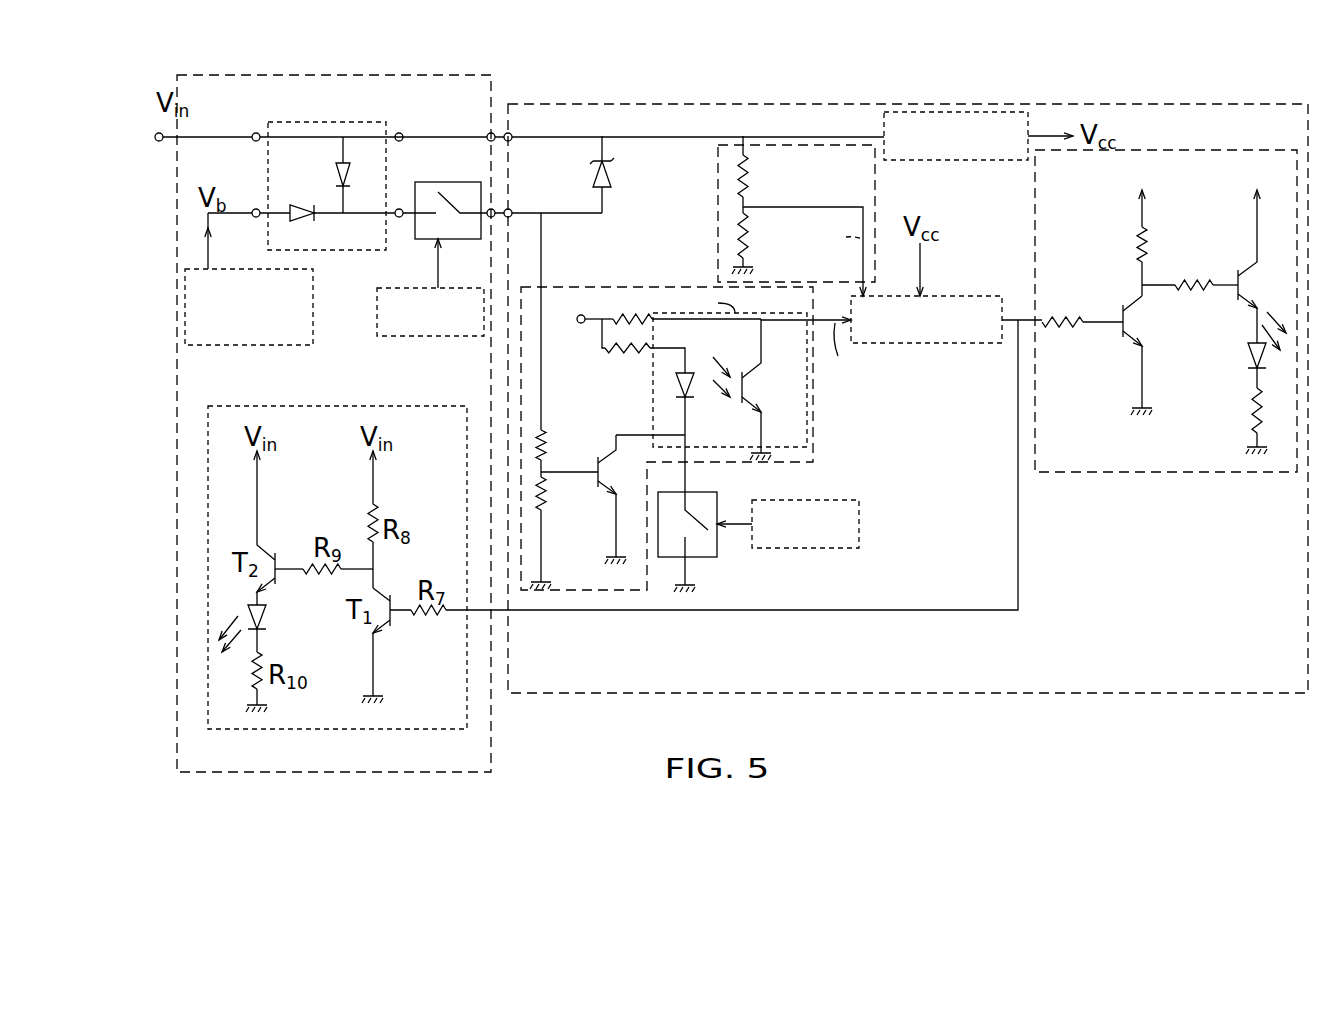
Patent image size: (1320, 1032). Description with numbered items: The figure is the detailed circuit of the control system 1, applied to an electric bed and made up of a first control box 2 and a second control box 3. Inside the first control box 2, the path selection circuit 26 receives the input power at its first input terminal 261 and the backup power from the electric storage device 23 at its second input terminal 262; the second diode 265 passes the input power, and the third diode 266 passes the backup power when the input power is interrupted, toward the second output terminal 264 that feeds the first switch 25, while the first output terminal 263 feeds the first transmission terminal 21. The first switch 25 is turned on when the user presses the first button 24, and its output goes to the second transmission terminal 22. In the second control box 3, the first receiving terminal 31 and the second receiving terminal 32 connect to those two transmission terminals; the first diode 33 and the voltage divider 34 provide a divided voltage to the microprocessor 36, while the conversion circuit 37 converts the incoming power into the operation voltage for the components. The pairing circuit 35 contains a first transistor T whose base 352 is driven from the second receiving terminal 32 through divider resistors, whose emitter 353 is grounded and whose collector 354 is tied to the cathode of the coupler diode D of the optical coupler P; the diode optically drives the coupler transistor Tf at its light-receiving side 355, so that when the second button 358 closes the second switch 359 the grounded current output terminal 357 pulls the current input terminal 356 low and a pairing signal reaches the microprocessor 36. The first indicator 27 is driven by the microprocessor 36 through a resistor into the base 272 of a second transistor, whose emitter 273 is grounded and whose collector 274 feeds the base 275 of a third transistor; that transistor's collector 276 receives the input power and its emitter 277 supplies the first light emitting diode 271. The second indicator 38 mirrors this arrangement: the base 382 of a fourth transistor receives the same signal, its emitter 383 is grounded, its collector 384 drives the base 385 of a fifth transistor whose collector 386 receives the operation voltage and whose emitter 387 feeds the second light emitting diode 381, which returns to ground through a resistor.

The control system 1 is at (1282, 83).
The first control box 2 is at (493, 95).
The second control box 3 is at (745, 103).
The first transmission terminal 21 is at (488, 132).
The second transmission terminal 22 is at (490, 218).
The electric storage device 23 is at (212, 346).
The first button 24 is at (377, 321).
The first switch 25 is at (420, 182).
The path selection circuit 26 is at (350, 251).
The first indicator 27 is at (412, 405).
The first receiving terminal 31 is at (511, 134).
The second receiving terminal 32 is at (511, 211).
The first diode 33 is at (612, 174).
The voltage divider 34 is at (718, 212).
The pairing circuit 35 is at (814, 413).
The microprocessor 36 is at (915, 344).
The conversion circuit 37 is at (957, 161).
The second indicator 38 is at (1147, 473).
The first input terminal 261 is at (255, 133).
The second input terminal 262 is at (255, 218).
The first output terminal 263 is at (401, 133).
The second output terminal 264 is at (400, 218).
The second diode 265 is at (338, 176).
The third diode 266 is at (312, 221).
The first light emitting diode 271 is at (268, 622).
The second control terminal 272 is at (393, 620).
The second current output terminal 273 is at (376, 662).
The second current input terminal 274 is at (375, 571).
The third control terminal 275 is at (283, 560).
The third current input terminal 276 is at (259, 504).
The third current output terminal 277 is at (255, 606).
The first control terminal 352 is at (597, 460).
The first current output terminal 353 is at (614, 527).
The first current input terminal 354 is at (640, 435).
The light receiving portion of phototransistor 355 is at (740, 382).
The current input terminal 356 is at (763, 366).
The current output terminal 357 is at (760, 436).
The second button 358 is at (860, 511).
The second switch 359 is at (718, 549).
The second light emitting diode 381 is at (1240, 362).
The fourth control terminal 382 is at (1108, 323).
The fourth current output terminal 383 is at (1140, 376).
The fourth current input terminal 384 is at (1140, 292).
The fifth control terminal 385 is at (1235, 282).
The fifth current input terminal 386 is at (1255, 240).
The fifth current output terminal 387 is at (1250, 326).